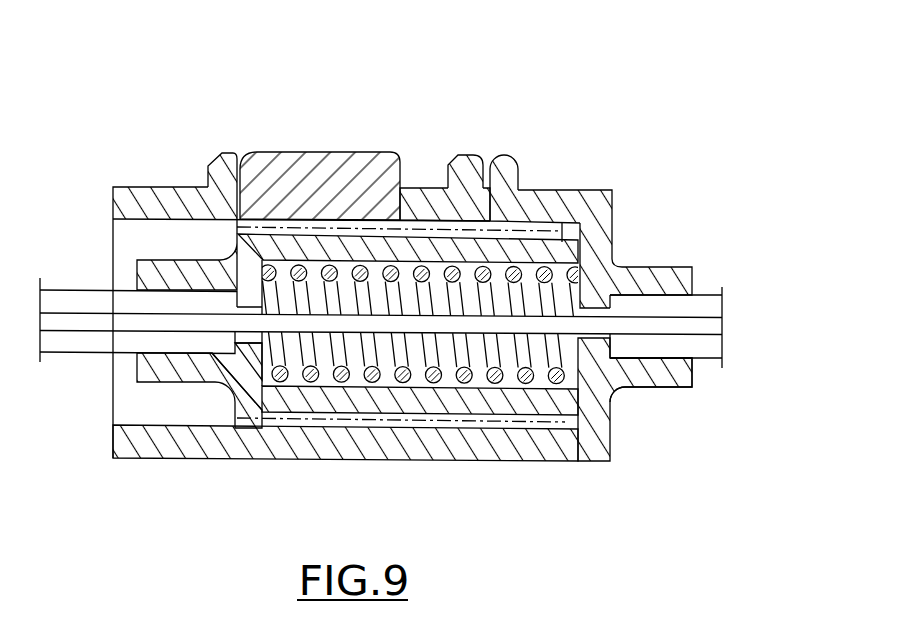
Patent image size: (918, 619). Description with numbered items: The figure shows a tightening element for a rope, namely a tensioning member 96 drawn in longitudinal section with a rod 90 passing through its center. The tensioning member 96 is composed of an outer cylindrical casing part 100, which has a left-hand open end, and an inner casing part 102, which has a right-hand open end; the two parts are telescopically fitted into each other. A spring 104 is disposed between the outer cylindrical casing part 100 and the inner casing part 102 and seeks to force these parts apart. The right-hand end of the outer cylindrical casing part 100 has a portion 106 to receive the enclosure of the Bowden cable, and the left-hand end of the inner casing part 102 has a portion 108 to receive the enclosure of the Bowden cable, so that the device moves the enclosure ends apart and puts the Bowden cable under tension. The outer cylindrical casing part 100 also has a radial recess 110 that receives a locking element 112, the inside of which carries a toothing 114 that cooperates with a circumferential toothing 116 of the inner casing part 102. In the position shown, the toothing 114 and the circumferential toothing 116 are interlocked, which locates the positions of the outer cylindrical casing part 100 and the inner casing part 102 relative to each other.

The rod / shaft 90 is at (698, 333).
The tensioning member 96 is at (566, 168).
The outer cylindrical casing part 100 is at (604, 180).
The inner casing part 102 is at (212, 412).
The spring 104 is at (538, 388).
The portion to receive the enclosure of the Bowden cable 106 is at (657, 264).
The portion to receive the enclosure of the Bowden cable 108 is at (165, 368).
The radial recess 110 is at (480, 156).
The locking element 112 is at (381, 146).
The toothing 114 is at (238, 186).
The circumferential toothing 116 is at (306, 233).